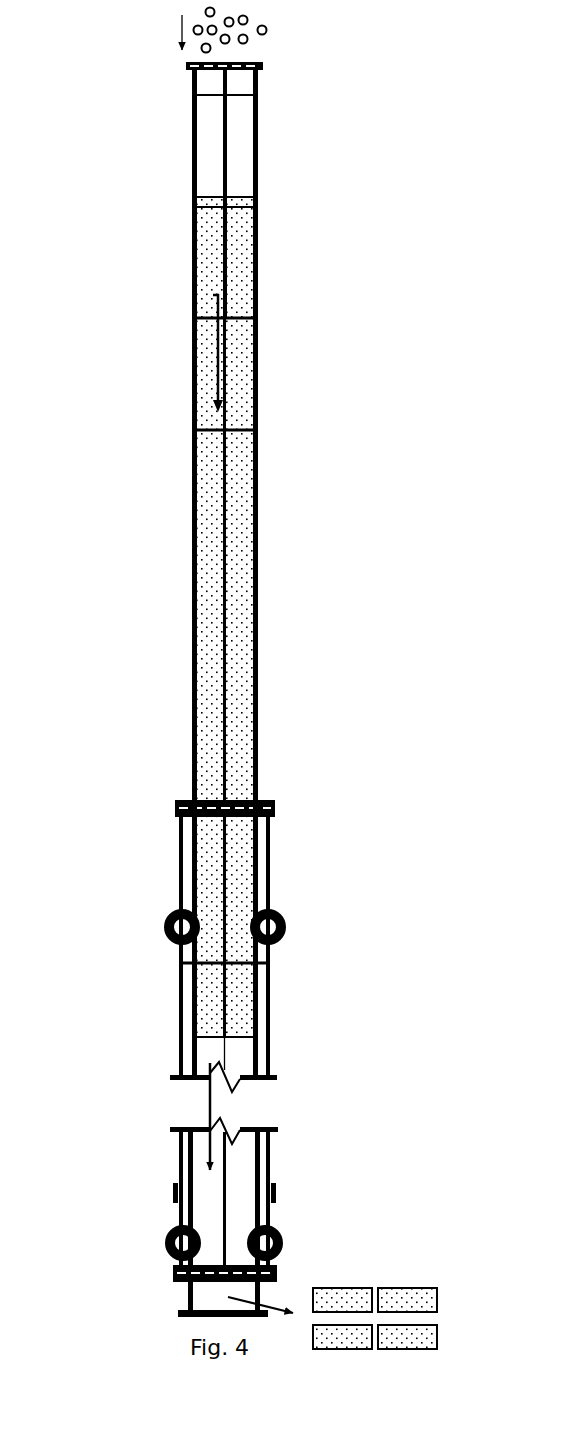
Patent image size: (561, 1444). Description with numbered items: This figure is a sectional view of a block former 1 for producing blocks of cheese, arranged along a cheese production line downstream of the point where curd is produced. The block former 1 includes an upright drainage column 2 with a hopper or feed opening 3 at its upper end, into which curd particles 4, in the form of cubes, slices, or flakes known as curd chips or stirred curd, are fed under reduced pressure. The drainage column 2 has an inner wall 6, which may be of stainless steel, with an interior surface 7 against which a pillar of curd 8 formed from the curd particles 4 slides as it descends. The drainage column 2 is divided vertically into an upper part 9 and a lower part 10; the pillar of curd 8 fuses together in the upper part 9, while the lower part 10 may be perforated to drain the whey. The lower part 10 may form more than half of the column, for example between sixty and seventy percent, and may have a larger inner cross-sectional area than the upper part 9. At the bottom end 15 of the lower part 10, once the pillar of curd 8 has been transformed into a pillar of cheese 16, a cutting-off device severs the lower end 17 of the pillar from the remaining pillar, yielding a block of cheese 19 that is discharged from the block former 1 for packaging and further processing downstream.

The block former 1 is at (125, 163).
The drainage column 2 is at (181, 492).
The feed opening 3 is at (226, 70).
The curd particles 4 is at (266, 32).
The inner wall 6 is at (223, 677).
The interior surface 7 is at (192, 263).
The pillar of curd 8 is at (238, 268).
The upper part 9 is at (210, 387).
The lower part 10 is at (208, 879).
The bottom end 15 is at (173, 1283).
The pillar of cheese 16 is at (248, 1000).
The lower end 17 is at (239, 1035).
The block of cheese 19 is at (407, 1288).